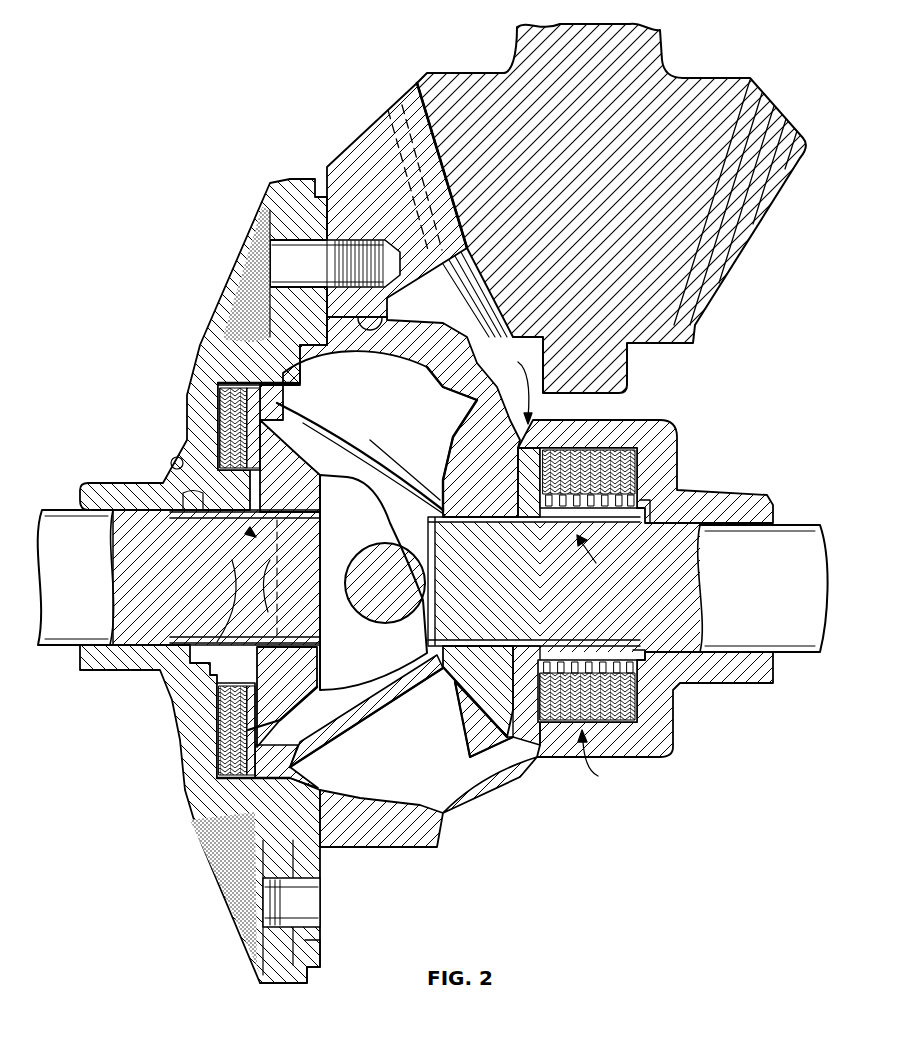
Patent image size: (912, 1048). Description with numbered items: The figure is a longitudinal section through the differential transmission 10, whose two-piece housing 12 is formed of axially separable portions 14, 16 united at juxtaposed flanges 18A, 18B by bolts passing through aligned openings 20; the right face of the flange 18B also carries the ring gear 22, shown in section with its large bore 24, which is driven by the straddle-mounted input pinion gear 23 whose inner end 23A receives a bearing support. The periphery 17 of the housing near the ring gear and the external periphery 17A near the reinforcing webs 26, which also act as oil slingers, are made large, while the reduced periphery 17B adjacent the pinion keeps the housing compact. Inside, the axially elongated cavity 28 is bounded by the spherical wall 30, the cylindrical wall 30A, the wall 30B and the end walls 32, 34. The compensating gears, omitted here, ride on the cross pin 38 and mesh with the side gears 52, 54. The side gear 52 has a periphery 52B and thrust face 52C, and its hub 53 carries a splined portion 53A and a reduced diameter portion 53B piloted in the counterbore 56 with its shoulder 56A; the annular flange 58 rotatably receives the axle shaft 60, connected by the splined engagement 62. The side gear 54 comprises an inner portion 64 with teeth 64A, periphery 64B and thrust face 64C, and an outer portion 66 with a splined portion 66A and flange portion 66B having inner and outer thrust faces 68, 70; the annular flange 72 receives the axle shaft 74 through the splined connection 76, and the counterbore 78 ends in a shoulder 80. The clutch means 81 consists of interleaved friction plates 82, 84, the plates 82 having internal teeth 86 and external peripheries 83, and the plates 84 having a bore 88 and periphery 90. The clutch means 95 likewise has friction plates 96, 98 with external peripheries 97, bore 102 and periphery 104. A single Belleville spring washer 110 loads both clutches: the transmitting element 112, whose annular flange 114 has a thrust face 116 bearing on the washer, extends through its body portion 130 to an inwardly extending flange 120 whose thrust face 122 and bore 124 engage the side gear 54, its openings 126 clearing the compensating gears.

The differential transmission 10 is at (222, 222).
The two-piece housing 12 is at (362, 850).
The housing portion 14 is at (215, 352).
The housing portion 16 is at (390, 417).
The periphery 17 is at (412, 320).
The external periphery 17A is at (230, 285).
The reduced periphery 17B is at (650, 420).
The flange 18A is at (290, 976).
The flange 18B is at (322, 956).
The openings 20 is at (263, 921).
The ring gear 22 is at (368, 200).
The input pinion gear 23 is at (597, 208).
The inner end of pinion 23A is at (627, 392).
The bore 24 is at (388, 318).
The reinforcing webs 26 is at (235, 878).
The cavity 28 is at (460, 815).
The spherical wall 30 is at (400, 845).
The cylindrical wall 30A is at (615, 722).
The wall 30B is at (300, 385).
The end wall 32 is at (222, 721).
The end wall 34 is at (640, 713).
The cross pin 38 is at (385, 583).
The side gear 52 is at (270, 614).
The periphery 52B is at (335, 411).
The thrust face 52C is at (258, 534).
The hub 53 is at (197, 536).
The splined portion 53A is at (233, 530).
The reduced diameter portion 53B is at (210, 632).
The side gear 54 is at (511, 385).
The counterbore 56 is at (190, 536).
The shoulder 56A is at (207, 638).
The annular flange 58 is at (100, 485).
The axle shaft 60 is at (76, 577).
The splined engagement 62 is at (270, 565).
The inner portion 64 is at (487, 633).
The teeth 64A is at (470, 719).
The periphery 64B is at (474, 762).
The thrust face 64C is at (528, 750).
The outer portion 66 is at (530, 630).
The splined portion 66A is at (612, 628).
The flange portion 66B is at (532, 462).
The inner thrust face 68 is at (480, 528).
The outer thrust face 70 is at (545, 525).
The annular flange 72 is at (752, 497).
The axle shaft 74 is at (684, 587).
The splined connection 76 is at (600, 560).
The counterbore 78 is at (640, 515).
The shoulder 80 is at (648, 650).
The clutch means 81 is at (225, 837).
The friction plates 82 is at (225, 737).
The external peripheries 83 is at (225, 817).
The friction plates 84 is at (228, 754).
The internal teeth 86 is at (217, 642).
The bore 88 is at (268, 612).
The periphery 90 is at (230, 786).
The clutch means 95 is at (601, 760).
The friction plates 96 is at (620, 480).
The external peripheries 97 is at (637, 452).
The friction plates 98 is at (640, 697).
The bore 102 is at (636, 636).
The periphery 104 is at (635, 730).
The Belleville spring washer 110 is at (218, 398).
The transmitting element 112 is at (422, 796).
The annular flange 114 is at (293, 770).
The thrust face 116 is at (258, 738).
The inwardly extending flange 120 is at (428, 660).
The thrust face 122 is at (438, 530).
The bore 124 is at (440, 629).
The openings 126 is at (350, 690).
The body portion 130 is at (380, 452).